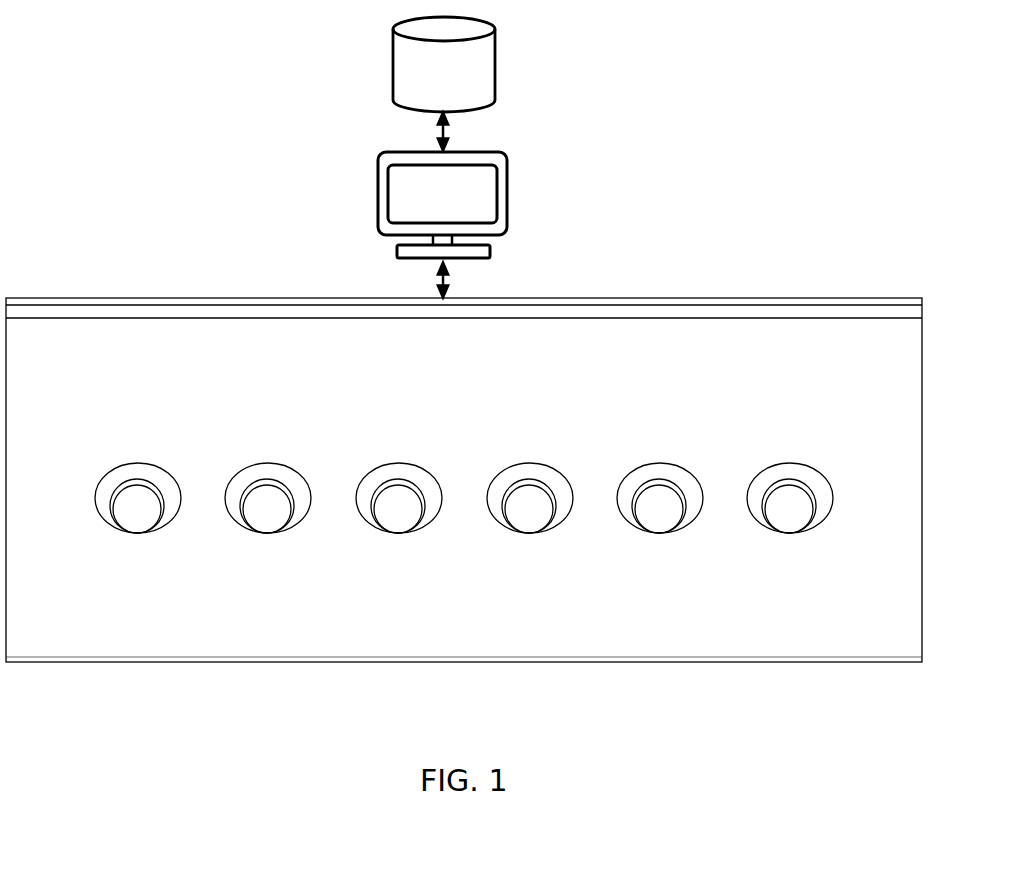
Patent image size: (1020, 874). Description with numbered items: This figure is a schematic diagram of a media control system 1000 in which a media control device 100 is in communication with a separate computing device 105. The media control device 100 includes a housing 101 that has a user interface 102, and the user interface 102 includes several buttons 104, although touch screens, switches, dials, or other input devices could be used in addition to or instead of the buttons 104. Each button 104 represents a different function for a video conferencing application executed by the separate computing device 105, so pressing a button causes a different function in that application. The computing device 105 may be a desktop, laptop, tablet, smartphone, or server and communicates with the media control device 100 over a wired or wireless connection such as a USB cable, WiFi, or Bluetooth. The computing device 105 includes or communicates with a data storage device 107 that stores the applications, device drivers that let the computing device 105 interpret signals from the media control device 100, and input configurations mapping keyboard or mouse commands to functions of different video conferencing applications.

The media control system 1000 is at (234, 74).
The media control device 100 is at (807, 226).
The housing 101 is at (855, 340).
The user interface 102 is at (662, 350).
The buttons 104 is at (127, 537).
The separate computing device 105 is at (442, 205).
The data storage device 107 is at (444, 64).